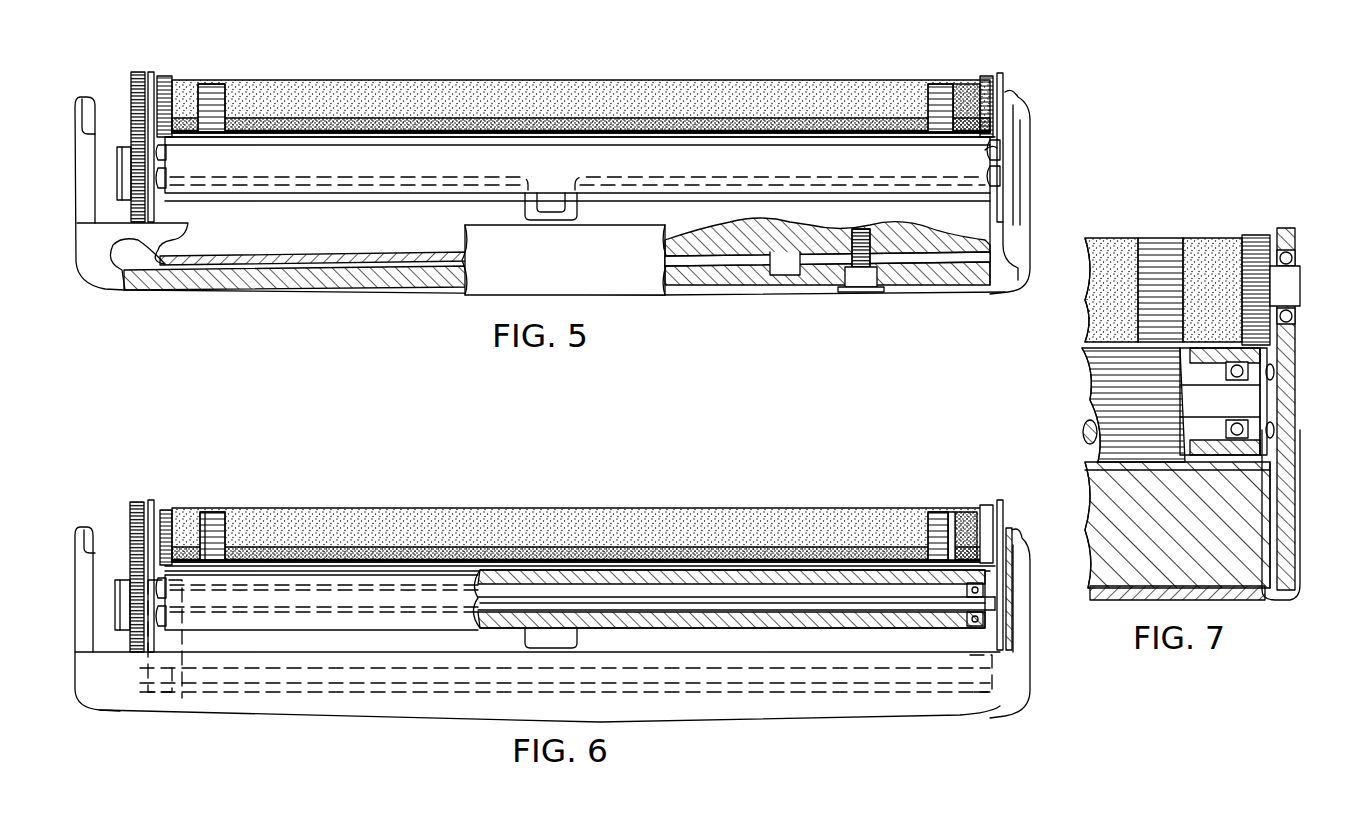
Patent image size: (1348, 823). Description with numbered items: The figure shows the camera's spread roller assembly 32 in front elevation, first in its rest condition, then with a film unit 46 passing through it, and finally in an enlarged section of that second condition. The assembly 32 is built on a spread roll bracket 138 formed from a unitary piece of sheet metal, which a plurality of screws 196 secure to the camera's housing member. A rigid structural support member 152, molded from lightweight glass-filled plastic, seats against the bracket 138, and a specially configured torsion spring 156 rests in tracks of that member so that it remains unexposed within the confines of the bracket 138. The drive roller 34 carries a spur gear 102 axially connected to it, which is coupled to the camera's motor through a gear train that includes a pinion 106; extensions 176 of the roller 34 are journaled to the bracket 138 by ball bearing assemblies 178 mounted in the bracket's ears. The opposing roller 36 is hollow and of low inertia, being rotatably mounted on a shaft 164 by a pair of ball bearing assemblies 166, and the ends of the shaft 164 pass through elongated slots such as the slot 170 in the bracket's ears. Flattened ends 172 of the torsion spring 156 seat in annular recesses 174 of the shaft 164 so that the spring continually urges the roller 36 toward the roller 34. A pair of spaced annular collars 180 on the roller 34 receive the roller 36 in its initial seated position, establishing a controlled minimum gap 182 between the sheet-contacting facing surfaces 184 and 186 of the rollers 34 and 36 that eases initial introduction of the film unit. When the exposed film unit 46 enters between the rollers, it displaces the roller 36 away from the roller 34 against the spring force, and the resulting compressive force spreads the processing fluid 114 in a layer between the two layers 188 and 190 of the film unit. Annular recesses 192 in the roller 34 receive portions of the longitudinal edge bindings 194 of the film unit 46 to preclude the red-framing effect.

In FIG. 5, the spread roller assembly 32 is at (828, 78).
In FIG. 6, the spread roller assembly 32 is at (878, 494).
In FIG. 7, the spread roller assembly 32 is at (1330, 402).
In FIG. 5, the drive roller 34 is at (928, 86).
In FIG. 6, the drive roller 34 is at (940, 512).
In FIG. 7, the drive roller 34 is at (1136, 240).
In FIG. 5, the roller 36 is at (998, 190).
In FIG. 6, the roller 36 is at (726, 606).
In FIG. 7, the roller 36 is at (1085, 462).
In FIG. 6, the film unit 46 is at (1000, 571).
In FIG. 5, the spur gear 102 is at (150, 72).
In FIG. 6, the spur gear 102 is at (137, 502).
In FIG. 5, the pinion 106 is at (132, 142).
In FIG. 6, the pinion 106 is at (130, 580).
In FIG. 6, the processing fluid 114 is at (847, 562).
In FIG. 5, the spread roll bracket 138 is at (1010, 283).
In FIG. 6, the spread roll bracket 138 is at (1015, 688).
In FIG. 7, the spread roll bracket 138 is at (1290, 456).
In FIG. 7, the rigid structural support member 152 is at (1262, 592).
In FIG. 5, the torsion spring 156 is at (668, 176).
In FIG. 6, the torsion spring 156 is at (574, 648).
In FIG. 7, the torsion spring 156 is at (1280, 480).
In FIG. 5, the shaft 164 is at (1003, 148).
In FIG. 6, the shaft 164 is at (517, 613).
In FIG. 7, the shaft 164 is at (1243, 408).
In FIG. 6, the ball bearing assemblies 166 is at (185, 697).
In FIG. 7, the ball bearing assemblies 166 is at (1276, 500).
In FIG. 7, the elongated slot 170 is at (1265, 380).
In FIG. 5, the flattened ends 172 is at (168, 180).
In FIG. 6, the flattened ends 172 is at (150, 653).
In FIG. 7, the flattened ends 172 is at (1274, 428).
In FIG. 5, the annular recesses 174 is at (162, 152).
In FIG. 6, the annular recesses 174 is at (180, 588).
In FIG. 7, the annular recesses 174 is at (1274, 364).
In FIG. 7, the extensions 176 is at (1298, 300).
In FIG. 5, the ball bearing assemblies 178 is at (1005, 78).
In FIG. 6, the ball bearing assemblies 178 is at (1010, 520).
In FIG. 7, the ball bearing assemblies 178 is at (1294, 255).
In FIG. 5, the annular collars 180 is at (190, 59).
In FIG. 6, the annular collars 180 is at (166, 508).
In FIG. 7, the annular collars 180 is at (1256, 236).
In FIG. 5, the minimum gap 182 is at (403, 140).
In FIG. 5, the sheet-contacting facing surface 184 is at (588, 90).
In FIG. 6, the sheet-contacting facing surface 184 is at (625, 510).
In FIG. 7, the sheet-contacting facing surface 184 is at (1110, 238).
In FIG. 5, the sheet-contacting facing surface 186 is at (287, 195).
In FIG. 6, the sheet-contacting facing surface 186 is at (241, 630).
In FIG. 7, the sheet-contacting facing surface 186 is at (1104, 346).
In FIG. 6, the layer of the film unit 188 is at (752, 562).
In FIG. 6, the layer of the film unit 190 is at (784, 575).
In FIG. 5, the annular recesses 192 is at (215, 90).
In FIG. 6, the annular recesses 192 is at (220, 535).
In FIG. 7, the annular recesses 192 is at (1170, 240).
In FIG. 6, the longitudinal edge bindings 194 is at (207, 545).
In FIG. 5, the screws 196 is at (862, 290).